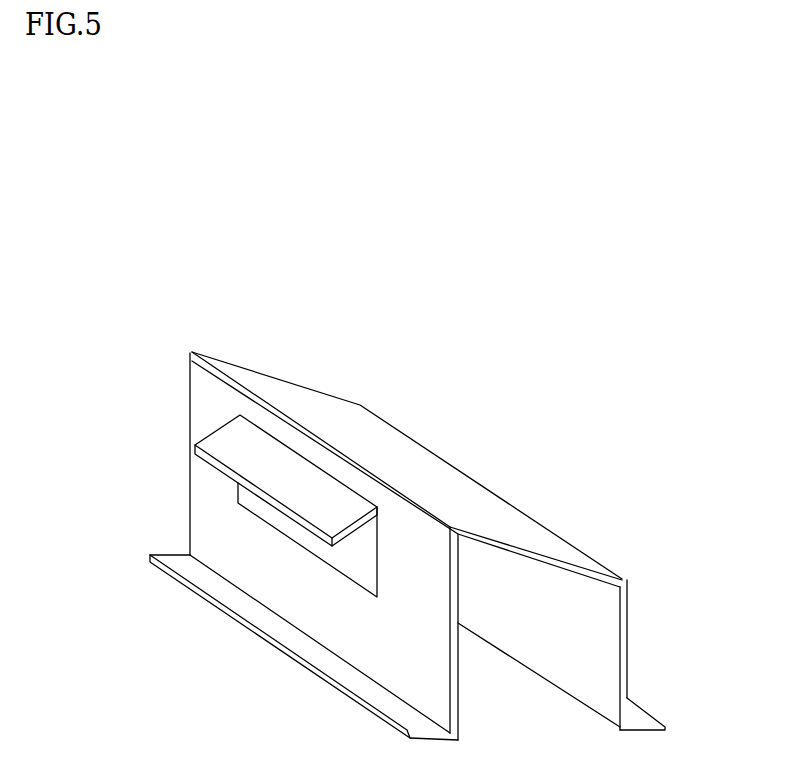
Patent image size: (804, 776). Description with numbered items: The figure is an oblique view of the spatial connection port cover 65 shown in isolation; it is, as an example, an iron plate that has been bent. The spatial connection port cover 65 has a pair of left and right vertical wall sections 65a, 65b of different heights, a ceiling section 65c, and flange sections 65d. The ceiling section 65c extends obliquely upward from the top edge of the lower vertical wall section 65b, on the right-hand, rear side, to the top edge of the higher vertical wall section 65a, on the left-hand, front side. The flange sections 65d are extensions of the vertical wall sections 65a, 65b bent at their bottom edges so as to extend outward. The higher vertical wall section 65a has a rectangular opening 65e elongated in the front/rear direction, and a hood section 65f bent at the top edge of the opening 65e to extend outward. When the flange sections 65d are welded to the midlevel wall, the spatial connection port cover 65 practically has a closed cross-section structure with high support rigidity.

The spatial connection port cover 65 is at (315, 390).
The vertical wall section 65a is at (202, 400).
The vertical wall section 65b is at (628, 622).
The ceiling section 65c is at (382, 435).
The flange sections 65d is at (252, 612).
The opening 65e is at (357, 582).
The hood section 65f is at (257, 463).